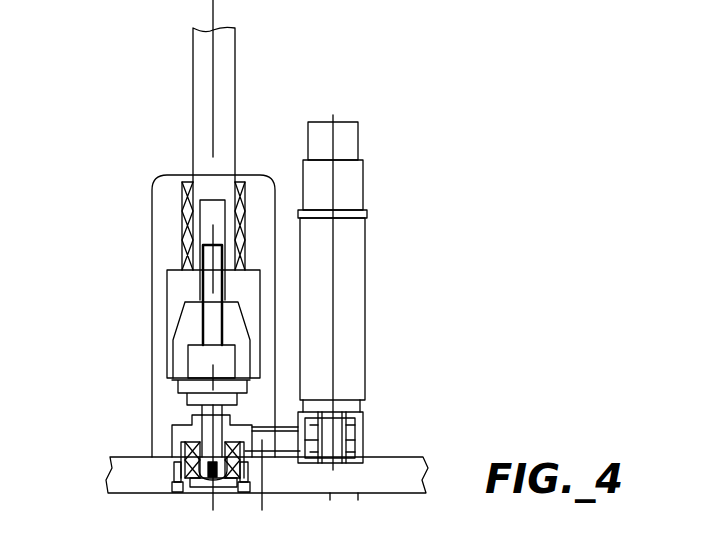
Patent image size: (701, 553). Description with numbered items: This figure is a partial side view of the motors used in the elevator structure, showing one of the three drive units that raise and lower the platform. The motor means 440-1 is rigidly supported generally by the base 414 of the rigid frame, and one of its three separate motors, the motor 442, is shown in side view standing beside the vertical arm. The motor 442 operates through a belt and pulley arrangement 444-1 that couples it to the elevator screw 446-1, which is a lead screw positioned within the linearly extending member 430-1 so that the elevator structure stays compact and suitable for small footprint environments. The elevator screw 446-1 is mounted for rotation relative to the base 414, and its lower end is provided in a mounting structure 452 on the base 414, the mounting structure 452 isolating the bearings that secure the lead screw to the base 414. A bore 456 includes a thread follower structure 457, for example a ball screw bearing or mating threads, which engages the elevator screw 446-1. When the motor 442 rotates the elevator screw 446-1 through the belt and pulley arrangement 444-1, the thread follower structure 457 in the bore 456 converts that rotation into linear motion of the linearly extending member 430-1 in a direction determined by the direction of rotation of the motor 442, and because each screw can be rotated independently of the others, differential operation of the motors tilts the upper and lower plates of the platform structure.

The linearly extending member 430-1 is at (193, 70).
The motor means 440-1 is at (347, 117).
The motor 442 is at (362, 275).
The belt and pulley arrangement 444-1 is at (365, 440).
The elevator screw 446-1 is at (197, 279).
The bore 456 is at (192, 313).
The thread follower structure 457 is at (185, 332).
The mounting structure 452 is at (250, 432).
The base 414 is at (140, 482).